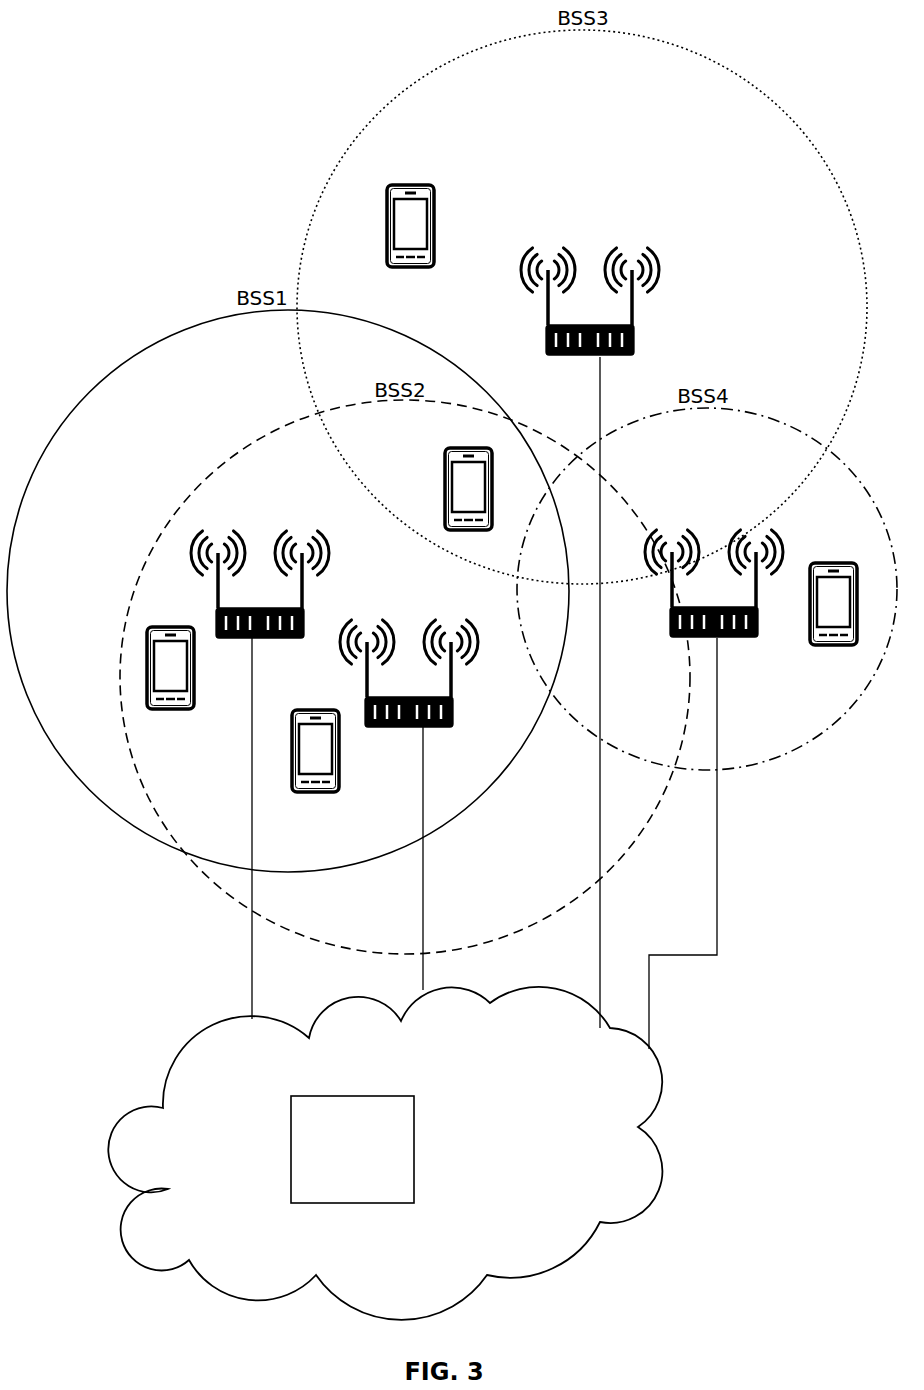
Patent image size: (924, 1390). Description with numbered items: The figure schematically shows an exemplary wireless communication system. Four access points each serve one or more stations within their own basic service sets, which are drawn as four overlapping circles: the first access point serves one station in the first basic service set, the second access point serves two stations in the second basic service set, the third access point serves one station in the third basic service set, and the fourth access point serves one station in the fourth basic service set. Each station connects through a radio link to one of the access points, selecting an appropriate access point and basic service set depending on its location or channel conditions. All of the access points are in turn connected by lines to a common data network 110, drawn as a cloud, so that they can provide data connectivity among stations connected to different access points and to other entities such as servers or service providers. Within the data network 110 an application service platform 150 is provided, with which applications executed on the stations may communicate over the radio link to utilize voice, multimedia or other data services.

The data network 110 is at (676, 1155).
The application service platform 150 is at (291, 1153).